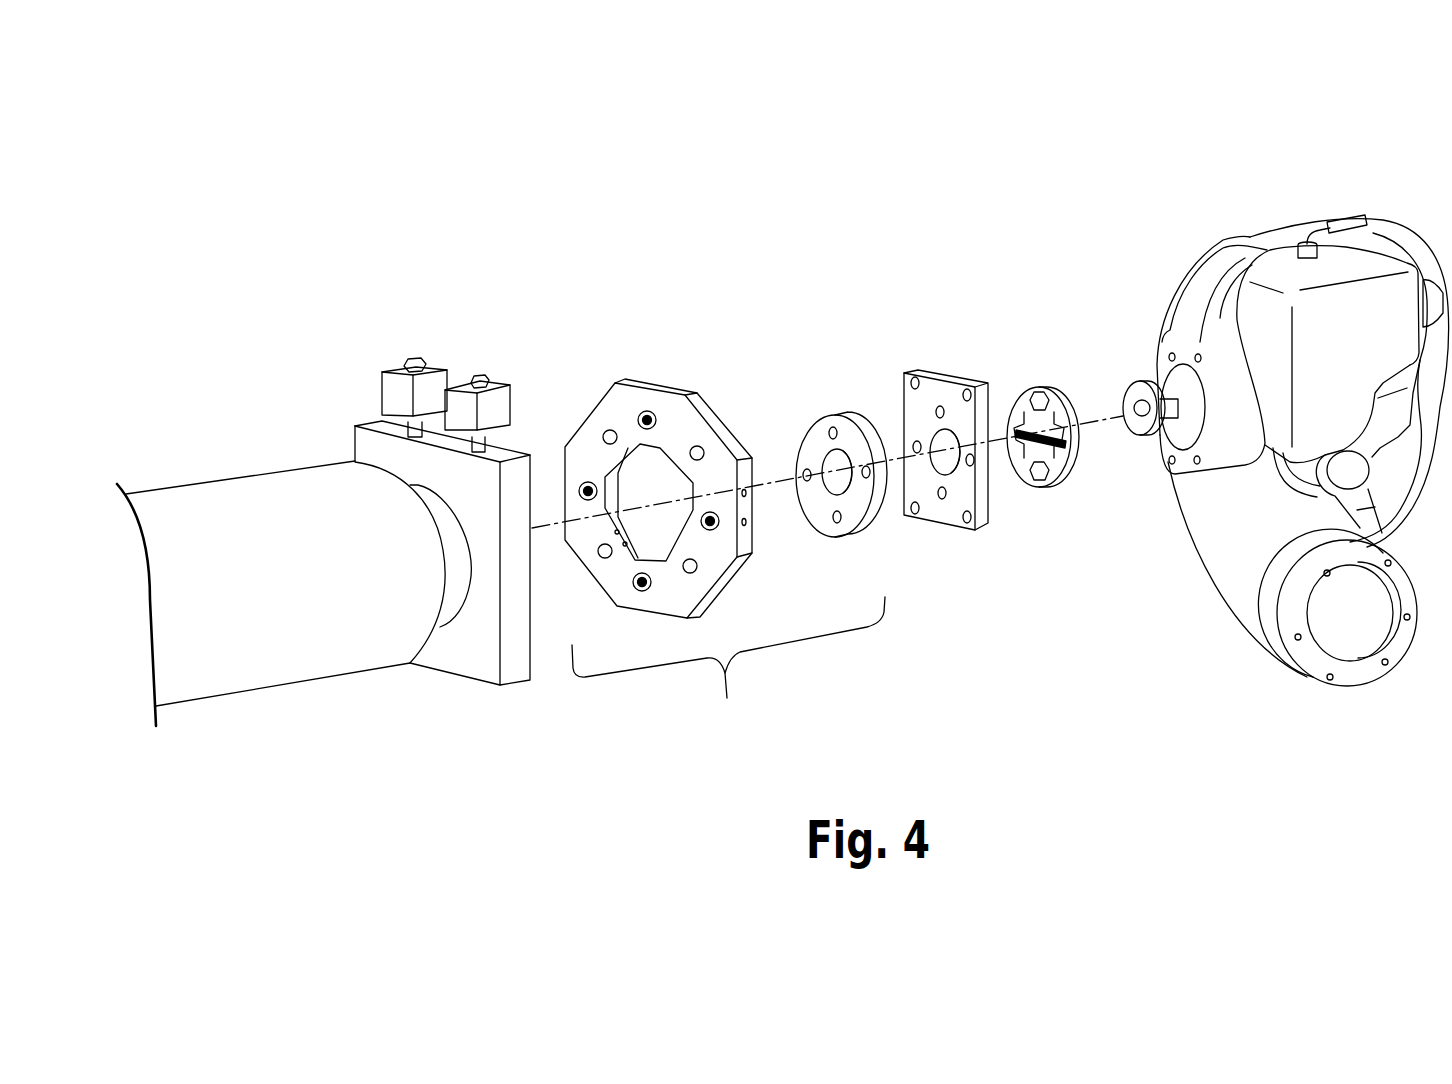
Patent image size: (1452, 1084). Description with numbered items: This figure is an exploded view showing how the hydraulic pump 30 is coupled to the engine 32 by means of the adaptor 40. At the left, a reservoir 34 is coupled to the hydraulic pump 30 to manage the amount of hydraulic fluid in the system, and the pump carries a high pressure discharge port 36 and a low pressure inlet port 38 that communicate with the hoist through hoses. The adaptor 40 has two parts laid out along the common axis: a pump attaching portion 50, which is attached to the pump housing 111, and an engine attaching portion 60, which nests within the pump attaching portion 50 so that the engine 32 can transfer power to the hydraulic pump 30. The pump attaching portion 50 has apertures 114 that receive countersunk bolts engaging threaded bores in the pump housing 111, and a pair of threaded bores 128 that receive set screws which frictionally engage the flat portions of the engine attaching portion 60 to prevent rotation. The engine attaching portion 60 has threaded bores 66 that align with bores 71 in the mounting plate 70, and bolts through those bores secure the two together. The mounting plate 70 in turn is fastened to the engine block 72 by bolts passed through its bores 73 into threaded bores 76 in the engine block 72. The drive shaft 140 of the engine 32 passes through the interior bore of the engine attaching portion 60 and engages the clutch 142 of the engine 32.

The hydraulic pump 30 is at (378, 366).
The engine 32 is at (1312, 210).
The reservoir 34 is at (222, 478).
The high pressure discharge port 36 is at (474, 374).
The low pressure inlet port 38 is at (418, 357).
The adaptor 40 is at (728, 665).
The pump attaching portion 50 is at (593, 408).
The engine attaching portion 60 is at (805, 428).
The threaded bores 66 is at (836, 523).
The mounting plate 70 is at (908, 372).
The bores 71 is at (942, 500).
The engine block 72 is at (1223, 417).
The bores 73 is at (957, 378).
The threaded bores 76 is at (1197, 462).
The pump housing 111 is at (459, 650).
The apertures 114 is at (648, 590).
The threaded bores 128 is at (747, 524).
The drive shaft 140 is at (1125, 418).
The clutch 142 is at (1028, 387).